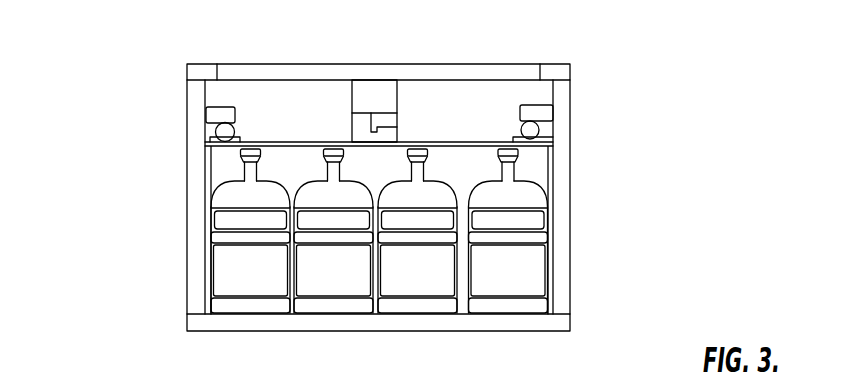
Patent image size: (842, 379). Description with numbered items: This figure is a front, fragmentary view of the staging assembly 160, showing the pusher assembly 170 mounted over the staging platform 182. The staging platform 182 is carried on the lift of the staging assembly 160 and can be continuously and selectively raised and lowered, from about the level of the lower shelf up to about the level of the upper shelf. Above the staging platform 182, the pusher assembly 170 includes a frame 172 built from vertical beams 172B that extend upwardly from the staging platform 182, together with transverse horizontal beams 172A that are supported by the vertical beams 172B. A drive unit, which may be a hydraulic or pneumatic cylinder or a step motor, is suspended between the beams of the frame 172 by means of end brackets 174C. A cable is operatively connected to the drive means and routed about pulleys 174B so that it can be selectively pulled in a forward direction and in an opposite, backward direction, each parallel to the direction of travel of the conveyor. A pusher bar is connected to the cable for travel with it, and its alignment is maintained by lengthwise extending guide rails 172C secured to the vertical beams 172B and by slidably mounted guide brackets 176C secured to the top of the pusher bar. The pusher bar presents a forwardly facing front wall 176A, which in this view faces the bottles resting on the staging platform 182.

The staging assembly 160 is at (617, 31).
The pusher assembly 170 is at (494, 47).
The frame 172 is at (572, 153).
The transverse horizontal beams 172A is at (299, 72).
The vertical beams 172B is at (195, 198).
The guide rails 172C is at (216, 115).
The pulleys 174B is at (398, 122).
The end brackets 174C is at (376, 97).
The front wall 176A is at (228, 166).
The guide brackets 176C is at (236, 136).
The staging platform 182 is at (530, 322).